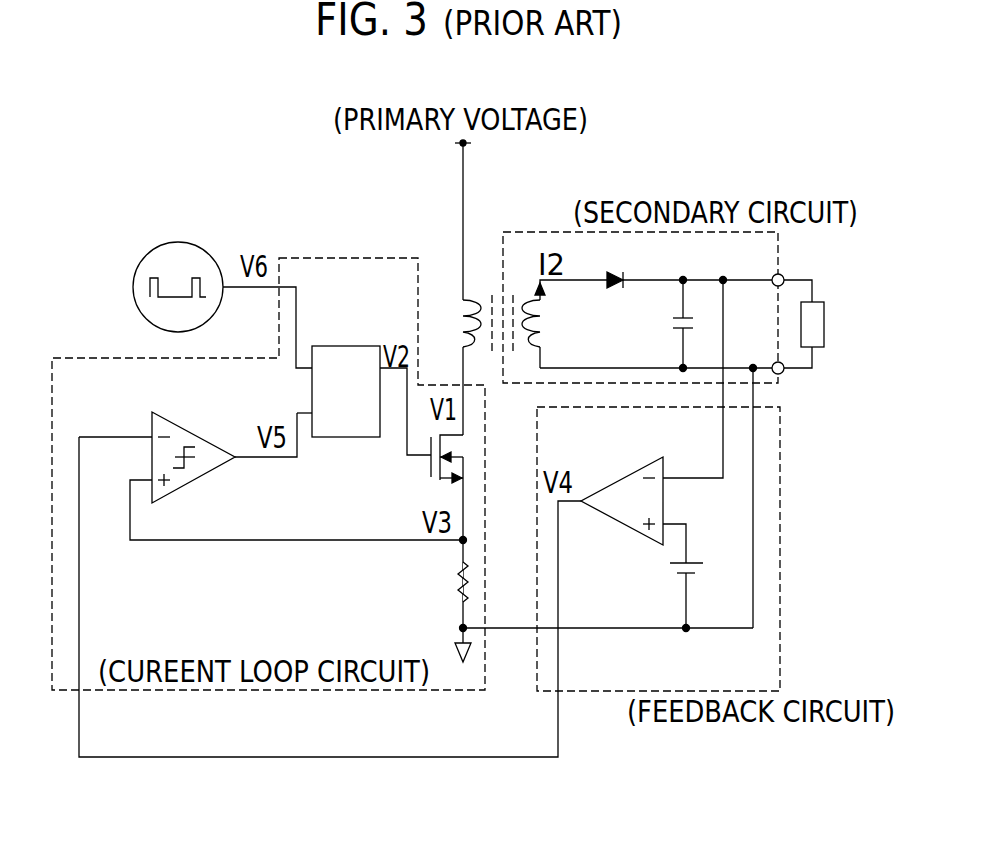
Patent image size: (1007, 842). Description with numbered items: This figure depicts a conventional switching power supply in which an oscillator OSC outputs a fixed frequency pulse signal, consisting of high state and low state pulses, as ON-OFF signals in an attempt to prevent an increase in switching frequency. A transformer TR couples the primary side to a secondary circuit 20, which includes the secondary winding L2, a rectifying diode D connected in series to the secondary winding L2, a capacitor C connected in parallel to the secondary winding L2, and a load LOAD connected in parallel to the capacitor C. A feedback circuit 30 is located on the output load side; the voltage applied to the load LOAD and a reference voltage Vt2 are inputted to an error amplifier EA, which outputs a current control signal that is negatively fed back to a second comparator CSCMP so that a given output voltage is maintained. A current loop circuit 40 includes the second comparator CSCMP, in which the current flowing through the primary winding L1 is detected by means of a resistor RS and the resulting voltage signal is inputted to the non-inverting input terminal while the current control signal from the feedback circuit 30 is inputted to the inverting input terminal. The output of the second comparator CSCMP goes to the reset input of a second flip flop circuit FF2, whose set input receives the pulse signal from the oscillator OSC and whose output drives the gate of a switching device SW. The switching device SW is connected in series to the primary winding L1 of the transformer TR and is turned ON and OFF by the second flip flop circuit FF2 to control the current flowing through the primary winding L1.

The secondary circuit 20 is at (553, 232).
The feedback circuit 30 is at (590, 692).
The current loop circuit 40 is at (337, 692).
The oscillator OSC is at (286, 173).
The second flip flop circuit FF2 is at (346, 374).
The second comparator CSCMP is at (200, 405).
The switching device SW is at (430, 465).
The resistor RS is at (445, 582).
The primary winding L1 is at (455, 323).
The secondary winding L2 is at (549, 323).
The transformer TR is at (548, 340).
The rectifying diode D is at (626, 265).
The capacitor C is at (674, 324).
The load LOAD is at (836, 324).
The error amplifier EA is at (627, 471).
The reference voltage Vt2 is at (704, 576).